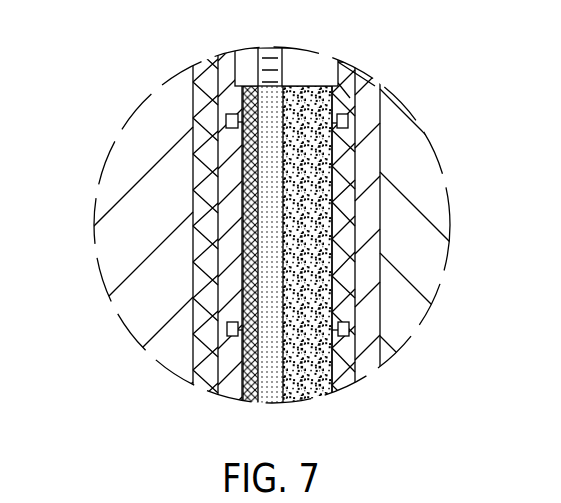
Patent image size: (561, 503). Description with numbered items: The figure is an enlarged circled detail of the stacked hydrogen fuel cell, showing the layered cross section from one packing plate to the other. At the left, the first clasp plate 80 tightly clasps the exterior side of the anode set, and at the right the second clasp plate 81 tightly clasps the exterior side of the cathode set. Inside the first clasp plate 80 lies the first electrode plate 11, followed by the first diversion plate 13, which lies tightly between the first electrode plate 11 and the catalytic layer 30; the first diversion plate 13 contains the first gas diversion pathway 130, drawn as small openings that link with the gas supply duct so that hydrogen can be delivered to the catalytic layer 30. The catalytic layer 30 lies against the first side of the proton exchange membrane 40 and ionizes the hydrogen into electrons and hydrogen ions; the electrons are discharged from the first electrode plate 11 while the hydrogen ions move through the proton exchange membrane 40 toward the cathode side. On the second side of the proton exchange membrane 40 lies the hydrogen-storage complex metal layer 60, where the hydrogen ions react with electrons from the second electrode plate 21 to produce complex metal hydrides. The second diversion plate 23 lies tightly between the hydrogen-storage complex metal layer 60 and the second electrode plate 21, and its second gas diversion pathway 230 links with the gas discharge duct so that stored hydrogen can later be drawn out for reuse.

The first electrode plate 11 is at (210, 68).
The first diversion plate 13 is at (230, 180).
The second electrode plate 21 is at (367, 164).
The second diversion plate 23 is at (337, 216).
The catalytic layer 30 is at (253, 398).
The proton exchange membrane 40 is at (218, 94).
The hydrogen-storage complex metal layer 60 is at (318, 392).
The first clasp plate 80 is at (112, 256).
The second clasp plate 81 is at (443, 262).
The first gas diversion pathway 130 is at (226, 121).
The second gas diversion pathway 230 is at (348, 121).